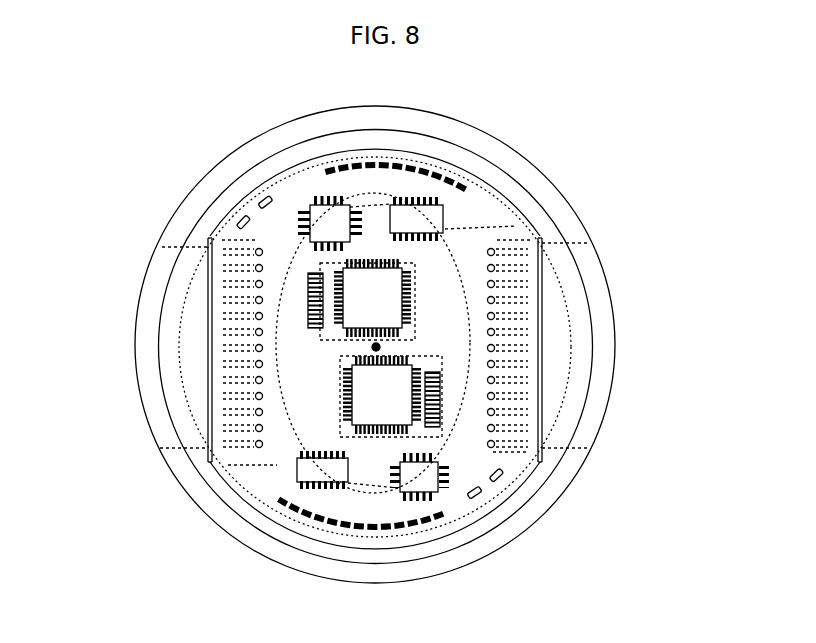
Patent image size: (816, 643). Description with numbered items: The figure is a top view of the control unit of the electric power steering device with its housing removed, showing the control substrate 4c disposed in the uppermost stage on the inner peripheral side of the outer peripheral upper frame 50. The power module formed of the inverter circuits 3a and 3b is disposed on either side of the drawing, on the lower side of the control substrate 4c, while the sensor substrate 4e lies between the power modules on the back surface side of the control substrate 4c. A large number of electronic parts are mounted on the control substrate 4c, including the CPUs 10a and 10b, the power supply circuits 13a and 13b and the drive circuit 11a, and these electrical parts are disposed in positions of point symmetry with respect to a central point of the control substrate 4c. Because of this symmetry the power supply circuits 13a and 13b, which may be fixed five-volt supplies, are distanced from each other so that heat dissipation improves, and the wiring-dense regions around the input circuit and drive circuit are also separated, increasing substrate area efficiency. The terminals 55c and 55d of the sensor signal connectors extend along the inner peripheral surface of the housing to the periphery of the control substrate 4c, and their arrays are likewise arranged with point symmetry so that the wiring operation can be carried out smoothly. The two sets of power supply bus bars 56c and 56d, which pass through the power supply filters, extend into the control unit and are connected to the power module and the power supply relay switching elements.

The upper frame 50 is at (197, 503).
The control substrate 4c is at (285, 508).
The sensor substrate 4e is at (408, 274).
The inverter circuit 3a is at (210, 240).
The inverter circuit 3b is at (573, 232).
The power supply circuit 13b is at (323, 198).
The power supply circuit 13a is at (413, 497).
The CPU 10b is at (436, 240).
The CPU 10a is at (363, 433).
The drive circuit 11a is at (425, 432).
The terminal 55d is at (413, 160).
The terminal 55c is at (305, 515).
The power supply bus bar 56c is at (478, 500).
The power supply bus bar 56d is at (503, 470).